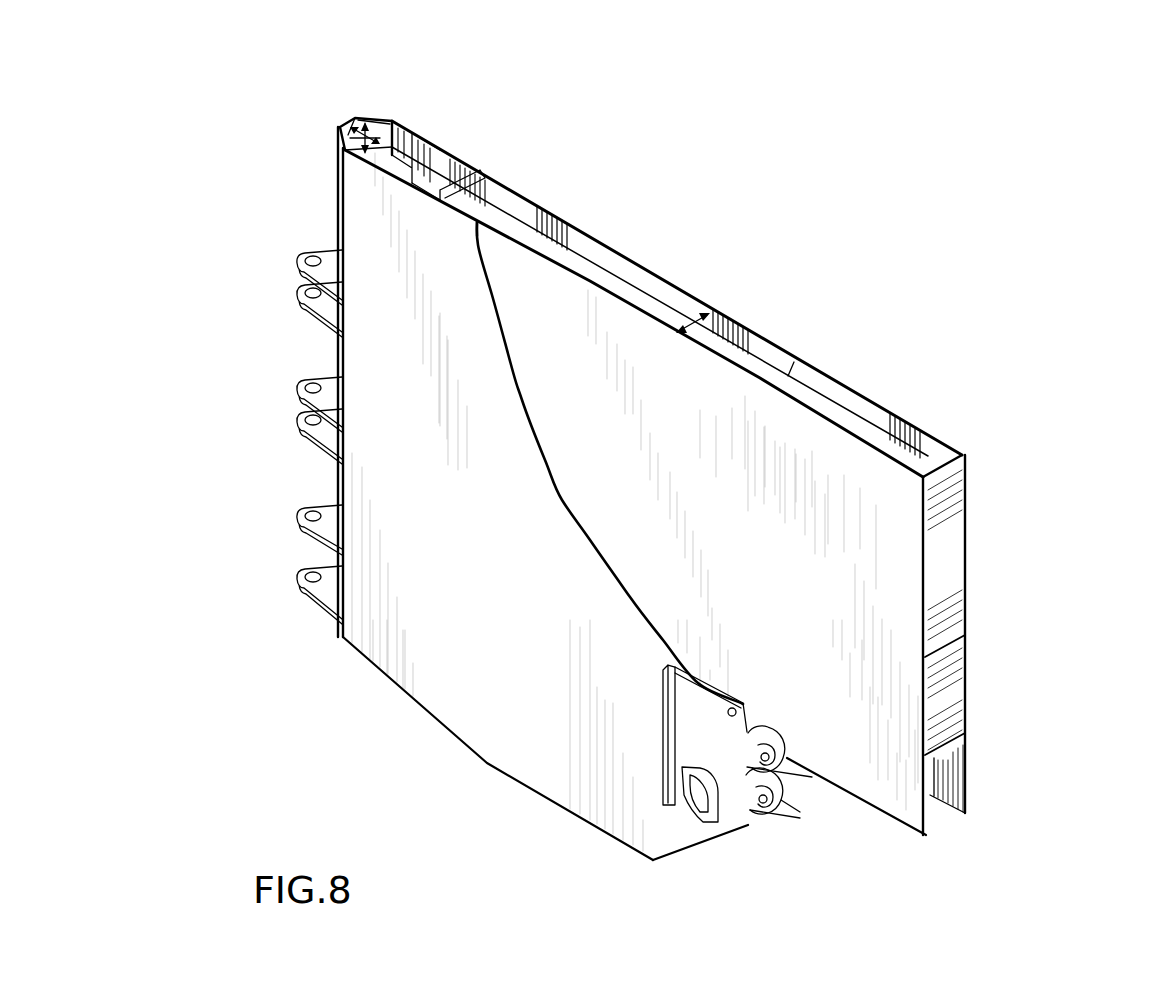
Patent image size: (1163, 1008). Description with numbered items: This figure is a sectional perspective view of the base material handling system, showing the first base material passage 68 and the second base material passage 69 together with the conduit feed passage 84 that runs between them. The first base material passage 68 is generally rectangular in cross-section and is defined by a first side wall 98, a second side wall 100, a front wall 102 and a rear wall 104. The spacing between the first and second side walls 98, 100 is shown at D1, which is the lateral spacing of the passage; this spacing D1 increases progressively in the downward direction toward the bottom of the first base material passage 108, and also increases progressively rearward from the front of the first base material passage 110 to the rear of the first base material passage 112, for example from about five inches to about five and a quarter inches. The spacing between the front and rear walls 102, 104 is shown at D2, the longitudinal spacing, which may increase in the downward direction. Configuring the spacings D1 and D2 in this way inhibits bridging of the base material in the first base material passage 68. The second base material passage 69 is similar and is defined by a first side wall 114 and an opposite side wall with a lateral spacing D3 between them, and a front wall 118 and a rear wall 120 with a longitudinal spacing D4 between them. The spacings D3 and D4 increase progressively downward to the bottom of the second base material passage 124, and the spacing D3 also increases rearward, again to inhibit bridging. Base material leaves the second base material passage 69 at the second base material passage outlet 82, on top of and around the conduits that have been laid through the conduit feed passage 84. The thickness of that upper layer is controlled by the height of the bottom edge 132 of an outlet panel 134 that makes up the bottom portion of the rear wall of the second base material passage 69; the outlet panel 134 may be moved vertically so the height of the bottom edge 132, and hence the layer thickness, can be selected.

The first base material passage 68 is at (366, 137).
The second base material passage 69 is at (830, 382).
The second base material passage outlet 82 is at (943, 818).
The conduit feed passage 84 is at (432, 177).
The first side wall 98 is at (392, 140).
The second side wall 100 is at (350, 162).
The front wall 102 is at (352, 142).
The rear wall 104 is at (400, 155).
The bottom of the first base material passage 108 is at (390, 657).
The front of the first base material passage 110 is at (342, 372).
The rear of the first base material passage 112 is at (623, 822).
The first side wall 114 is at (748, 343).
The front wall 118 is at (513, 213).
The rear wall 120 is at (927, 461).
The bottom of the second base material passage 124 is at (850, 797).
The bottom edge 132 is at (960, 757).
The outlet panel 134 is at (952, 692).
The spacing between the first and second side walls D1 is at (340, 130).
The spacing between the front and rear walls D2 is at (388, 135).
The lateral spacing D3 is at (690, 322).
The longitudinal spacing D4 is at (794, 365).